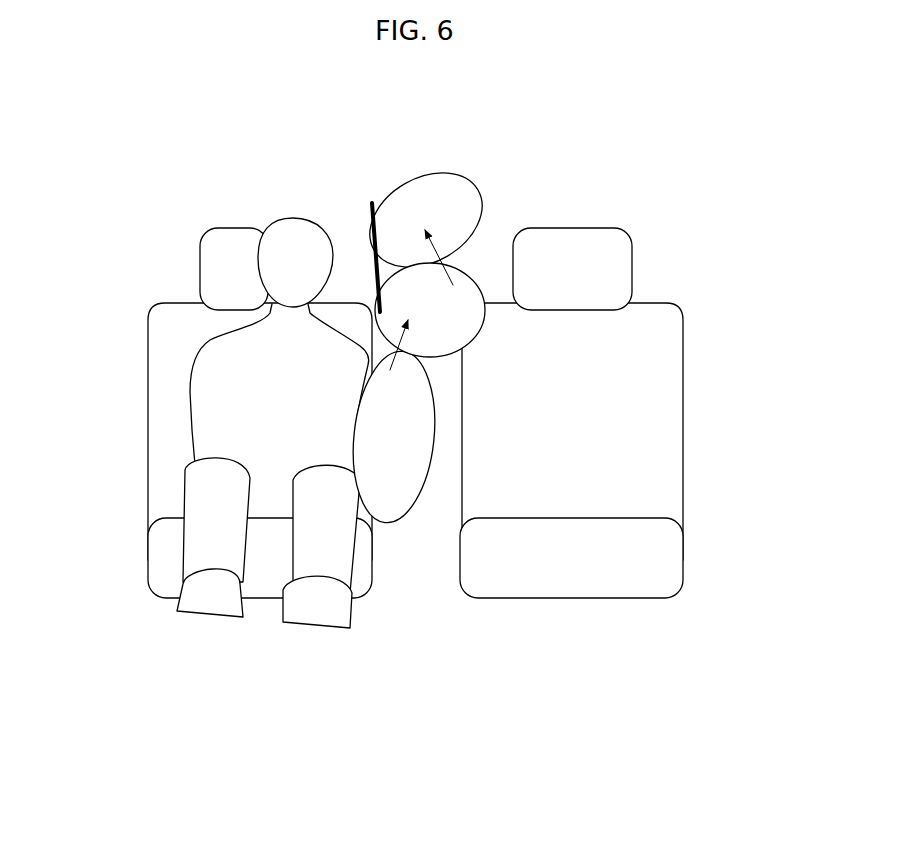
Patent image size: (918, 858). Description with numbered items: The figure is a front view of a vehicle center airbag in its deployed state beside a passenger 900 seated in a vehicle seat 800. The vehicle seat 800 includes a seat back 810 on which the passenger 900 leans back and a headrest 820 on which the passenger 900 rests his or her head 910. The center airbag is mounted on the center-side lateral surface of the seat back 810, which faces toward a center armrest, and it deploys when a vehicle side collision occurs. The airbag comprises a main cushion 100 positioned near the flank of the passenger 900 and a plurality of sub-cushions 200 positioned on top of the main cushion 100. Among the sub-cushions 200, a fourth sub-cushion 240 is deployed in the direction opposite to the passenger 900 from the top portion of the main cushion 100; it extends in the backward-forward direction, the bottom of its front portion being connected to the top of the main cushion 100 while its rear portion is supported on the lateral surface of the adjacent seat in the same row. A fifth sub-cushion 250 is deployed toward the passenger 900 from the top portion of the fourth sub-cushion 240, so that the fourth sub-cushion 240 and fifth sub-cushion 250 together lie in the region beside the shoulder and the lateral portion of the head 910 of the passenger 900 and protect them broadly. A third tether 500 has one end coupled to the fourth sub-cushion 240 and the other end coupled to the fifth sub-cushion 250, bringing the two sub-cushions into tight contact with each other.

The main cushion 100 is at (408, 477).
The sub-cushions 200 is at (574, 420).
The fourth sub-cushion 240 is at (457, 321).
The fifth sub-cushion 250 is at (420, 202).
The third tether 500 is at (377, 237).
The vehicle seat 800 is at (197, 382).
The seat back 810 is at (168, 498).
The headrest 820 is at (237, 252).
The passenger 900 is at (207, 390).
The head 910 is at (288, 240).